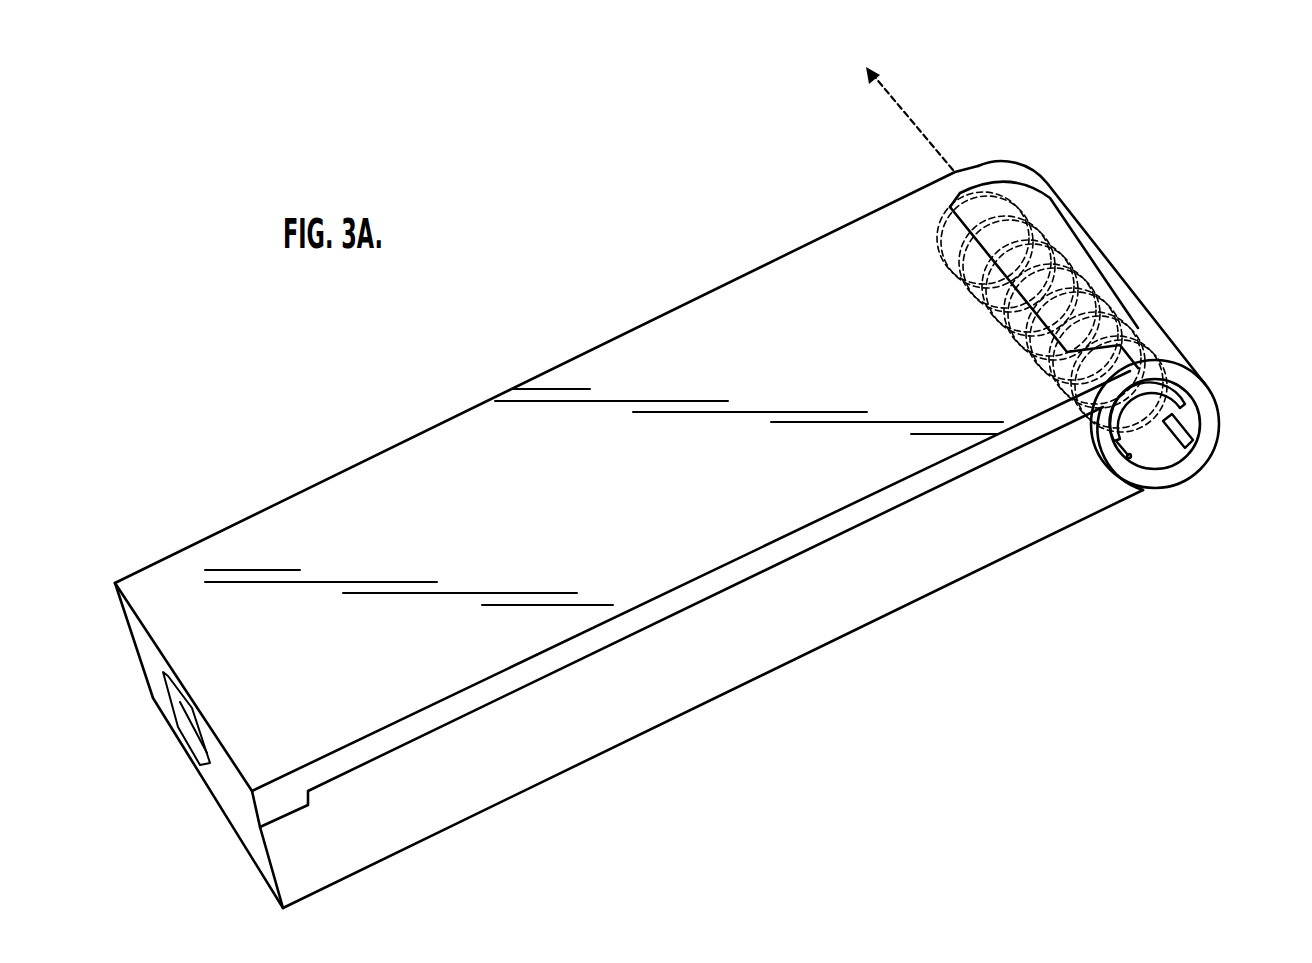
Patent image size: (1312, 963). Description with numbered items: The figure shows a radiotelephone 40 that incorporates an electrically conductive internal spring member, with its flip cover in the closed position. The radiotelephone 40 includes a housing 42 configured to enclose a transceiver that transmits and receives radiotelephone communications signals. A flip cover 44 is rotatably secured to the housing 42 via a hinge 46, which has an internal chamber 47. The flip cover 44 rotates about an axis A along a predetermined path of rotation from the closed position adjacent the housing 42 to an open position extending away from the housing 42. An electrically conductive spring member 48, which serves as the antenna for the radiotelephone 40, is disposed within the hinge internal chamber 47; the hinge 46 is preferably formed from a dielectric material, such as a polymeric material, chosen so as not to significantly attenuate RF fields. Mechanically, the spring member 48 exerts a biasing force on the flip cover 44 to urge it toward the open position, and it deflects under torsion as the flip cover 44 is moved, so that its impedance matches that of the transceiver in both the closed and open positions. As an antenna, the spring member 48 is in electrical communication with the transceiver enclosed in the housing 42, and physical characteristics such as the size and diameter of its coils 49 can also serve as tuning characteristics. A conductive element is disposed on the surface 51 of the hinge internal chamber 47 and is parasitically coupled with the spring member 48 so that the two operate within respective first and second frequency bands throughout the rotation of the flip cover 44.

The radiotelephone 40 is at (766, 246).
The housing 42 is at (998, 552).
The flip cover 44 is at (426, 476).
The hinge 46 is at (1047, 232).
The internal chamber 47 is at (1147, 439).
The spring member 48 is at (1170, 402).
The coils 49 is at (1113, 268).
The surface of the hinge internal chamber 51 is at (1168, 443).
The axis A is at (897, 105).